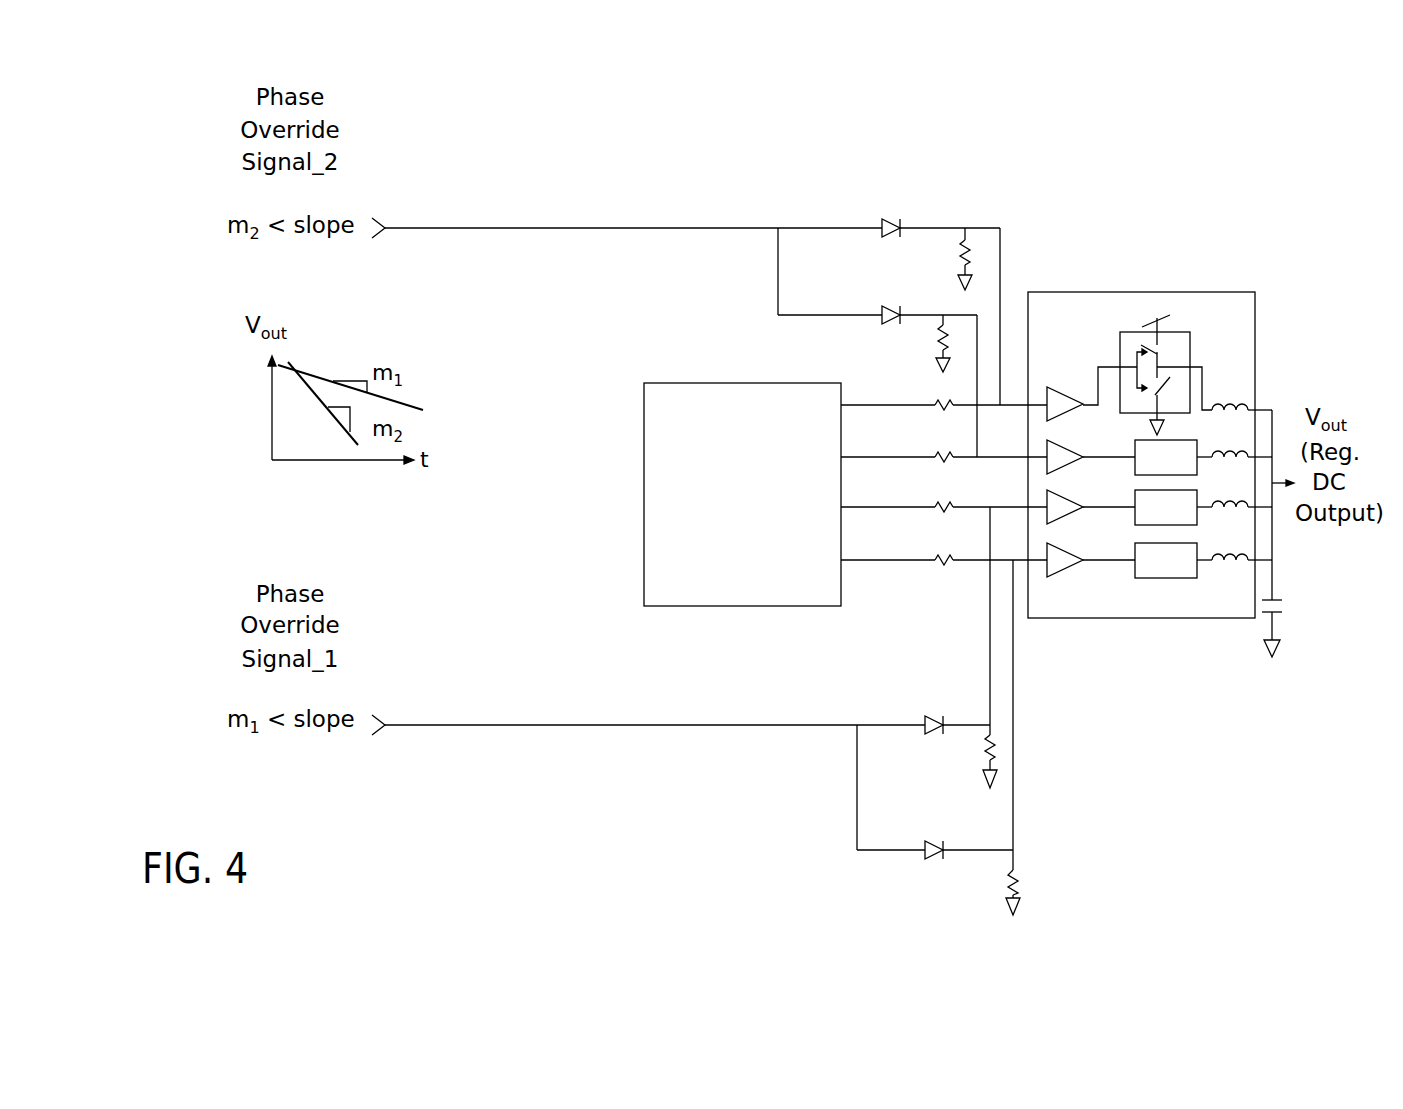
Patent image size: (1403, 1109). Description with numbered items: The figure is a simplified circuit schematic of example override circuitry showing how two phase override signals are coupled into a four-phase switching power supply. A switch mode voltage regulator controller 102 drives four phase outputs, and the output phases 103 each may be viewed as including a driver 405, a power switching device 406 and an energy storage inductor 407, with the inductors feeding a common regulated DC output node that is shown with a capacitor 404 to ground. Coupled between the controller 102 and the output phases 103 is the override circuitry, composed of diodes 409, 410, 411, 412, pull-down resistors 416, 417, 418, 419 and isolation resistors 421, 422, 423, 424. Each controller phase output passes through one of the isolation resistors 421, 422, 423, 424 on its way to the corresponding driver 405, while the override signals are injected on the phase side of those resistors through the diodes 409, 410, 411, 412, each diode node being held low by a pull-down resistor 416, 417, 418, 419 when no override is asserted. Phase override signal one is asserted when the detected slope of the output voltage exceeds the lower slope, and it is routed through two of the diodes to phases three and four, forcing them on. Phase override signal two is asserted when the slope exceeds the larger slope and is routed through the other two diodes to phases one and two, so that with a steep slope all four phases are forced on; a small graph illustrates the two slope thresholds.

The switch mode voltage regulator controller 102 is at (742, 494).
The output phases 103 is at (1130, 292).
The output capacitor 404 is at (1275, 592).
The driver 405 is at (1072, 378).
The power switching device 406 is at (1180, 332).
The energy storage inductor 407 is at (1229, 403).
The diode 409 is at (897, 212).
The diode 410 is at (880, 305).
The diode 411 is at (928, 706).
The diode 412 is at (928, 833).
The pull-down resistor 416 is at (955, 258).
The pull-down resistor 417 is at (935, 343).
The pull-down resistor 418 is at (982, 757).
The pull-down resistor 419 is at (1023, 878).
The isolation resistor 421 is at (930, 415).
The isolation resistor 422 is at (930, 467).
The isolation resistor 423 is at (930, 517).
The isolation resistor 424 is at (930, 570).